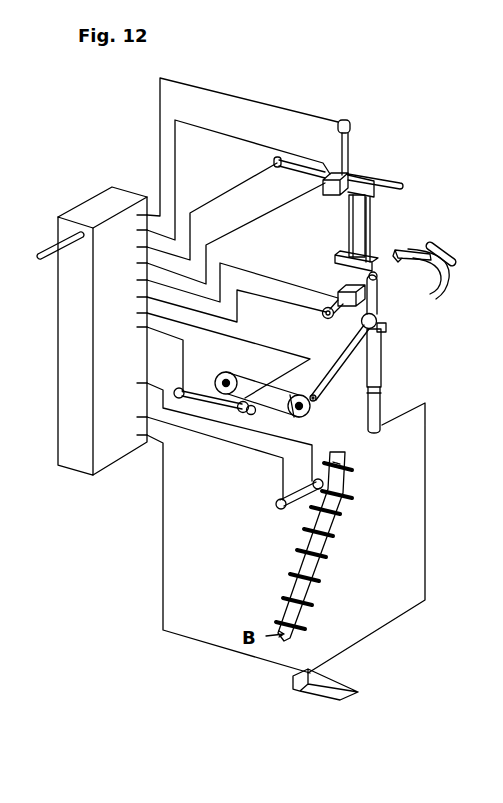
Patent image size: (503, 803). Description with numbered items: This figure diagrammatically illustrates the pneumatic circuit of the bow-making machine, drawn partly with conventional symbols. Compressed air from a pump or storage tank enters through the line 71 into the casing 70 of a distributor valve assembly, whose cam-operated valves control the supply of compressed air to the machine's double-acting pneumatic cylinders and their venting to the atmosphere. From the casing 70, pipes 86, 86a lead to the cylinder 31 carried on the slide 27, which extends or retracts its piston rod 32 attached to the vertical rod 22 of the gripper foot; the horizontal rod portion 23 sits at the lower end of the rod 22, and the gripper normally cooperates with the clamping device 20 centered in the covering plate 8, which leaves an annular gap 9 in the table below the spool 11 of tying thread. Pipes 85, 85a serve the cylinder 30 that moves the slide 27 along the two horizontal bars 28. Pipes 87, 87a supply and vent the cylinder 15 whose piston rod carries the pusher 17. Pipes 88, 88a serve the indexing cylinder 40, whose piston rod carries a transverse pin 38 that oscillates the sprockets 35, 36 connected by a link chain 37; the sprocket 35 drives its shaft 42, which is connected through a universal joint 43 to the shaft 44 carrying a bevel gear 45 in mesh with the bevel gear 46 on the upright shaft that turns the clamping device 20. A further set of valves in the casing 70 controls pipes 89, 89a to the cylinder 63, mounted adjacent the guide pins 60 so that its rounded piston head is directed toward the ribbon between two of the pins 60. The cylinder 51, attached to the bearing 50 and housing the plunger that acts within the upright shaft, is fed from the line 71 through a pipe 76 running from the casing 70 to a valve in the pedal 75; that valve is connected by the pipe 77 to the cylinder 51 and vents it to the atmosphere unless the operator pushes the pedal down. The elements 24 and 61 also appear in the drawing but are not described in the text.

The casing 70 is at (100, 200).
The line 71 is at (54, 248).
The pipe 86a is at (213, 90).
The pipe 86 is at (227, 135).
The pipe 85 is at (230, 189).
The pipe 85a is at (264, 217).
The pipe 87a is at (259, 273).
The pipe 87 is at (258, 297).
The pipe 88a is at (270, 347).
The pipe 88 is at (183, 356).
The pipe 89a is at (312, 445).
The pipe 89 is at (241, 446).
The pipe 76 is at (194, 638).
The pipe 77 is at (425, 583).
The pedal 75 is at (333, 682).
The double-acting pneumatic cylinder 31 is at (348, 150).
The double-acting cylinder 30 is at (302, 172).
The slide 27 is at (318, 192).
The horizontal bars 28 is at (378, 199).
The piston rod 32 is at (347, 231).
The vertical rod 22 is at (366, 214).
The base plate 24 is at (368, 260).
The clamping device 20 is at (393, 279).
The horizontal rod portion 23 is at (378, 284).
The pusher 17 is at (340, 288).
The cylinder 15 is at (333, 320).
The spool 11 is at (447, 252).
The covering plate 8 is at (448, 271).
The annular gap 9 is at (442, 289).
The bevel gear 45 is at (380, 333).
The bevel gear 46 is at (387, 327).
The shaft 44 is at (336, 368).
The bearing 50 is at (380, 367).
The pneumatic cylinder 51 is at (382, 397).
The universal joint 43 is at (316, 396).
The shaft 42 is at (314, 400).
The sprocket 36 is at (233, 375).
The transverse pin 38 is at (275, 392).
The link chain 37 is at (264, 409).
The sprocket 35 is at (300, 413).
The double-acting pneumatic indexing cylinder 40 is at (203, 398).
The double-acting pneumatic cylinder 63 is at (278, 504).
The tape 61 is at (338, 481).
The guide pins 60 is at (335, 557).